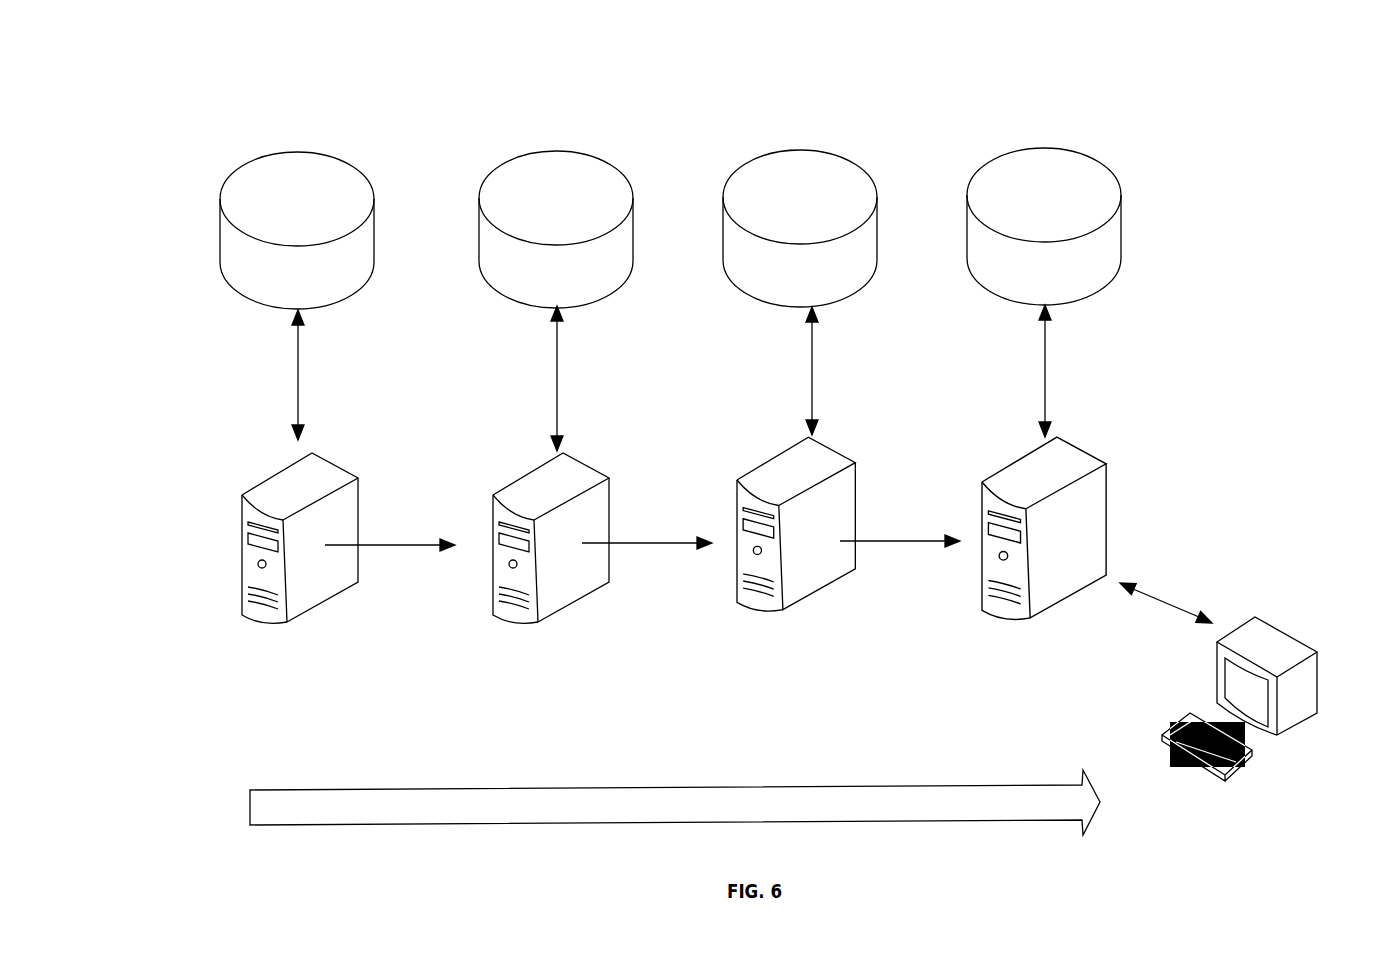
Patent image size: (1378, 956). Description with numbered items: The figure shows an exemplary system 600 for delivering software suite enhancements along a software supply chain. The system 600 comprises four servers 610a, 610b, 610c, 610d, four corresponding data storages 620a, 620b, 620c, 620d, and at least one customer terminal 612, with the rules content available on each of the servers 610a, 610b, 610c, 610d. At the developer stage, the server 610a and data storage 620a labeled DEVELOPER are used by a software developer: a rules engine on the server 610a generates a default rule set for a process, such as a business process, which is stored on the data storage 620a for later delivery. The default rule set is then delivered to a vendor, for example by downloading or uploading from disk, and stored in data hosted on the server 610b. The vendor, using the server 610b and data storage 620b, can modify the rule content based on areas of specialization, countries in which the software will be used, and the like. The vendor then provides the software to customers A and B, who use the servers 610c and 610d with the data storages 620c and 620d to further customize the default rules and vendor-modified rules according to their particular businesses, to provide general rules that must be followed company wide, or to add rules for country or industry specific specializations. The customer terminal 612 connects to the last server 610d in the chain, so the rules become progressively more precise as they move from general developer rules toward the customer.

The system 600 is at (725, 55).
The server 610a is at (288, 622).
The server 610b is at (538, 622).
The server 610c is at (783, 612).
The server 610d is at (1033, 617).
The data storage 620a is at (350, 297).
The data storage 620b is at (598, 298).
The data storage 620c is at (855, 295).
The data storage 620d is at (1088, 297).
The customer terminal 612 is at (1278, 630).